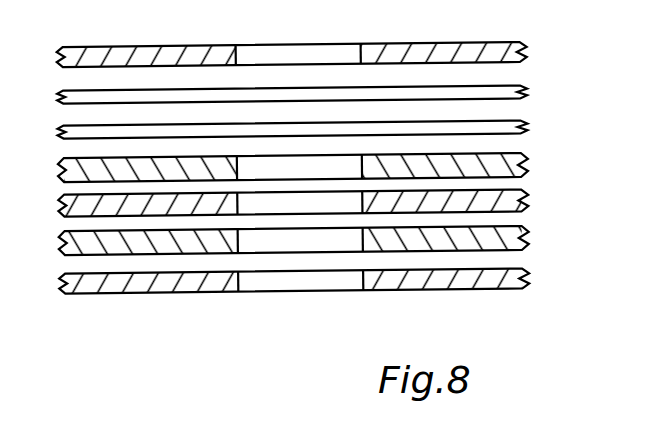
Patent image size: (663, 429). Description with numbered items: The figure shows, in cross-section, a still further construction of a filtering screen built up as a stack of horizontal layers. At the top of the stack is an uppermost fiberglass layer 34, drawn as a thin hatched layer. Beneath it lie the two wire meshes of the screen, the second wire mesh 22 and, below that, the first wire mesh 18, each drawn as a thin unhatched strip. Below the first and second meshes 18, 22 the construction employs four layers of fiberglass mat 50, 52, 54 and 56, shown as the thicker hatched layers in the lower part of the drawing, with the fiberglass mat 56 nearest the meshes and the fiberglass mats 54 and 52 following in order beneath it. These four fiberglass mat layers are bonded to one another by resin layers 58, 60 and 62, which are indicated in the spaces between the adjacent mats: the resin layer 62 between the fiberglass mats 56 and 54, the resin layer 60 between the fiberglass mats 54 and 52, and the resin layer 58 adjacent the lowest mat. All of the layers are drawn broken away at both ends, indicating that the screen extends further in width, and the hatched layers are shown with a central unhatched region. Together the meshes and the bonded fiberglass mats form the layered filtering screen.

The hatched layer 34 is at (527, 52).
The sheet layer 22 is at (526, 93).
The sheet layer 18 is at (526, 128).
The hatched layer 56 is at (524, 164).
The spacing between layers 62 is at (518, 183).
The hatched layer 54 is at (526, 205).
The spacing between layers 60 is at (518, 222).
The hatched layer 52 is at (526, 245).
The hatched layer 58 is at (518, 259).
The layer assembly 50 is at (526, 283).